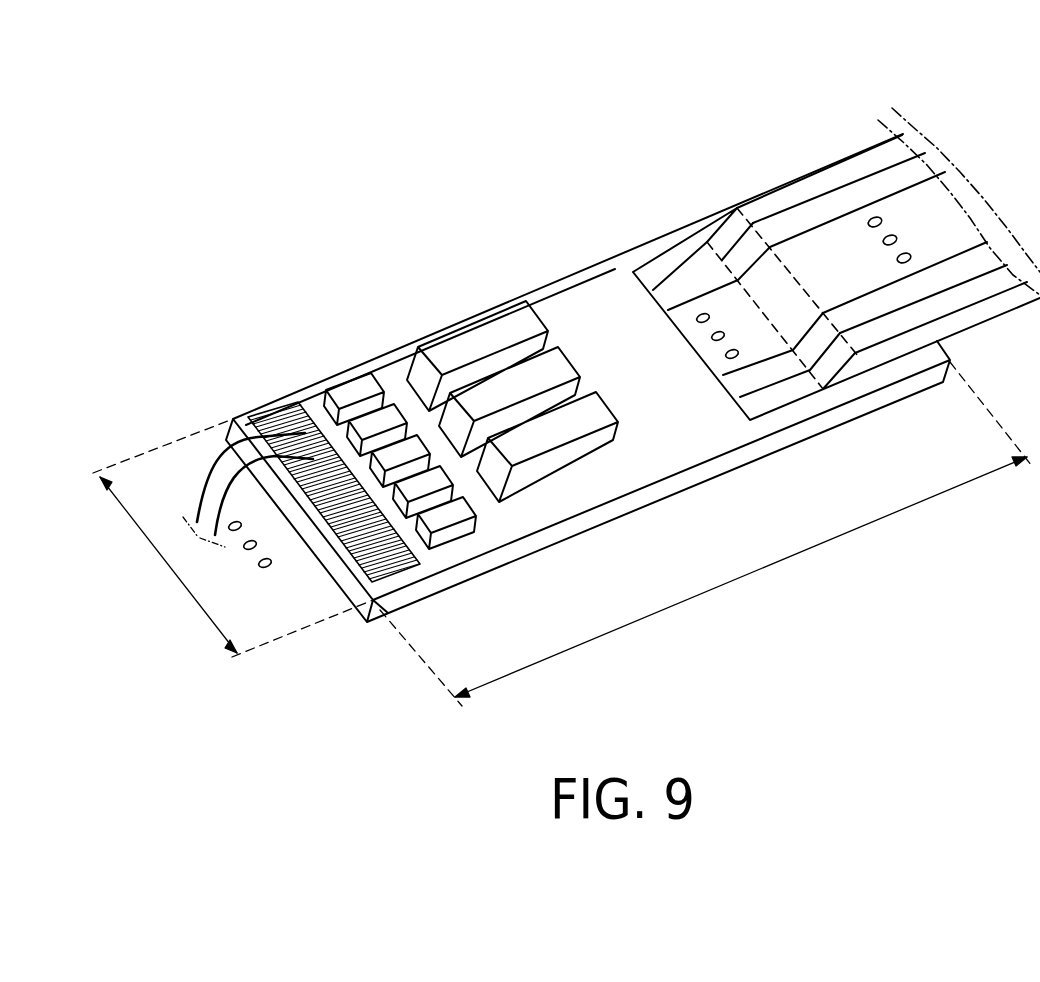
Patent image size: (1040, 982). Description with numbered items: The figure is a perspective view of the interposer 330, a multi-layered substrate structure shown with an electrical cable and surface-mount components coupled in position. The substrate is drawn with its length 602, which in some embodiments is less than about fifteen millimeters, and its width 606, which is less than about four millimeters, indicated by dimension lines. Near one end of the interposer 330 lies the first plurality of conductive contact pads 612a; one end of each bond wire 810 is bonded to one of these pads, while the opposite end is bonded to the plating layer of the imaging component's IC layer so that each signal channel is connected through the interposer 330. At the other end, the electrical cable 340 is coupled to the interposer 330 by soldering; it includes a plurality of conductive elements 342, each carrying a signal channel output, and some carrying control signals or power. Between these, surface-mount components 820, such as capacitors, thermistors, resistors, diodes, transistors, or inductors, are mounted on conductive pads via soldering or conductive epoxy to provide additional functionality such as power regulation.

The interposer 330 is at (251, 118).
The electrical cable 340 is at (836, 250).
The conductive elements 342 is at (665, 272).
The surface-mount component 820 is at (350, 388).
The first plurality of conductive contact pads 612a is at (278, 419).
The bond wire 810 is at (224, 463).
The width 606 is at (233, 538).
The length 602 is at (706, 534).